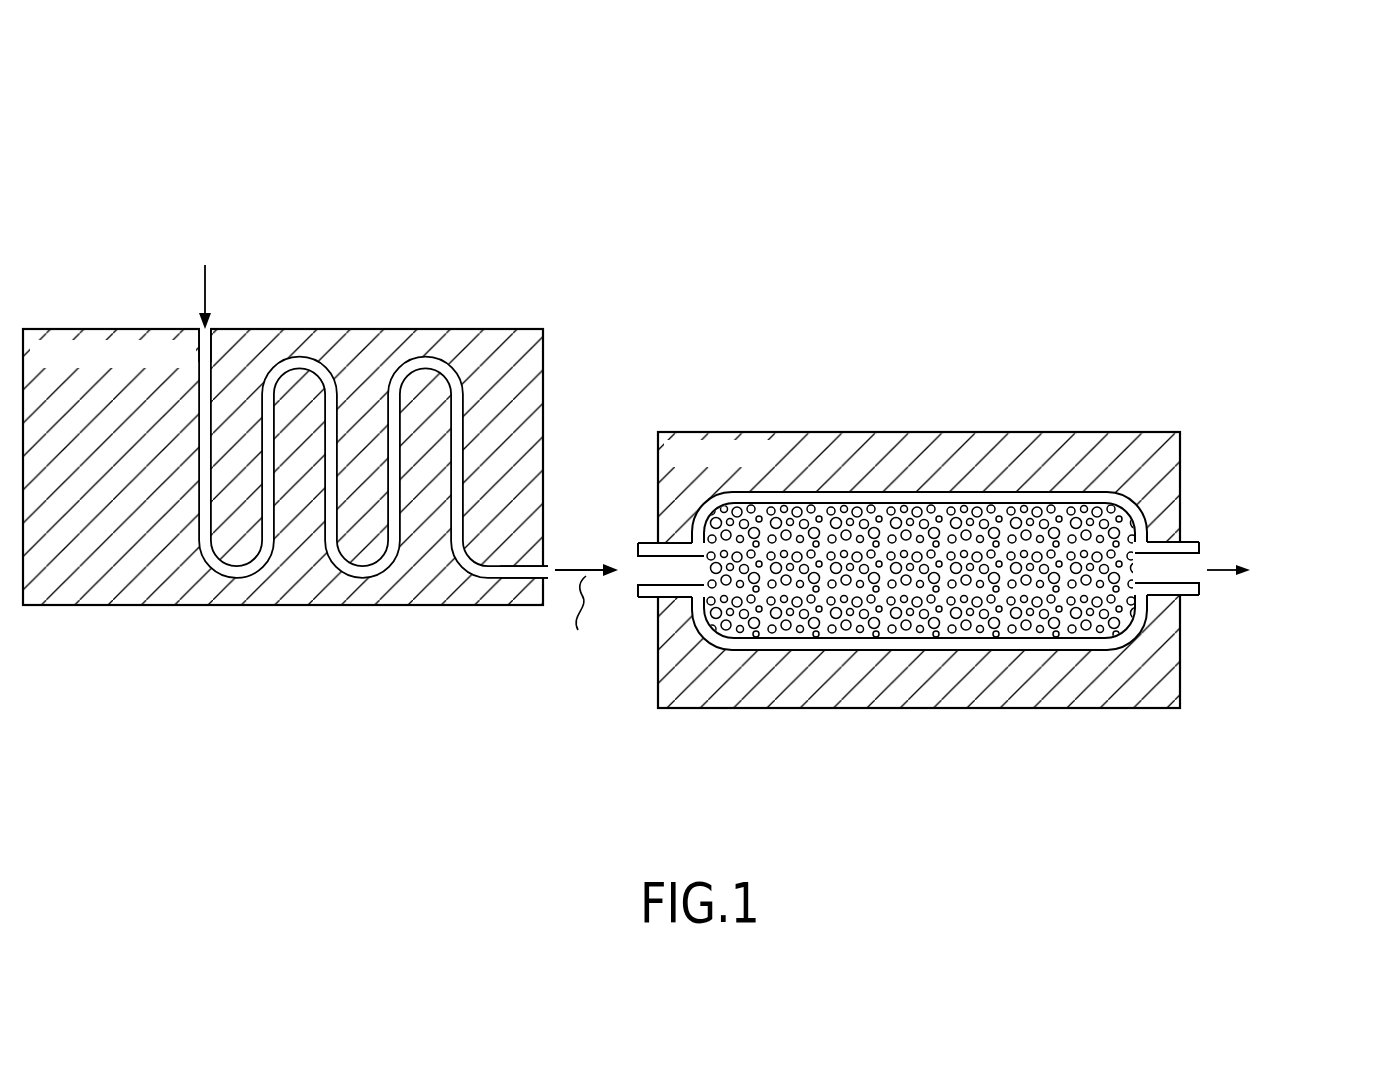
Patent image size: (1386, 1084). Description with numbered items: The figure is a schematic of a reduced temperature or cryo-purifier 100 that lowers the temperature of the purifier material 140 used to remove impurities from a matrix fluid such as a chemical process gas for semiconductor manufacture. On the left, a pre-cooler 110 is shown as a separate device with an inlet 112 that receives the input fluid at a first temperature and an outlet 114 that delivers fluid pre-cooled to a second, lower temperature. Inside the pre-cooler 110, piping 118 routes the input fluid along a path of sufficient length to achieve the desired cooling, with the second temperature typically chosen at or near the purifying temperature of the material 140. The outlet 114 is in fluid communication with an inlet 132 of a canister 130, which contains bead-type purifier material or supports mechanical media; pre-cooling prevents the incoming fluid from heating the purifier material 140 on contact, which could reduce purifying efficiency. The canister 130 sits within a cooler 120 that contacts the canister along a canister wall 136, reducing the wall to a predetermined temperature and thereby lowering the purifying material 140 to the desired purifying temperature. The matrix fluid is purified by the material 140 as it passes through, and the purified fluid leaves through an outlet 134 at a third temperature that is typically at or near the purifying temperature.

The purifier 100 is at (168, 166).
The pre-cooler 110 is at (62, 606).
The inlet 112 is at (212, 346).
The outlet 114 is at (547, 568).
The piping 118 is at (200, 531).
The cooler 120 is at (954, 710).
The canister 130 is at (1140, 484).
The inlet 132 is at (648, 543).
The outlet 134 is at (1193, 597).
The canister wall 136 is at (835, 498).
The purifier material 140 is at (988, 540).